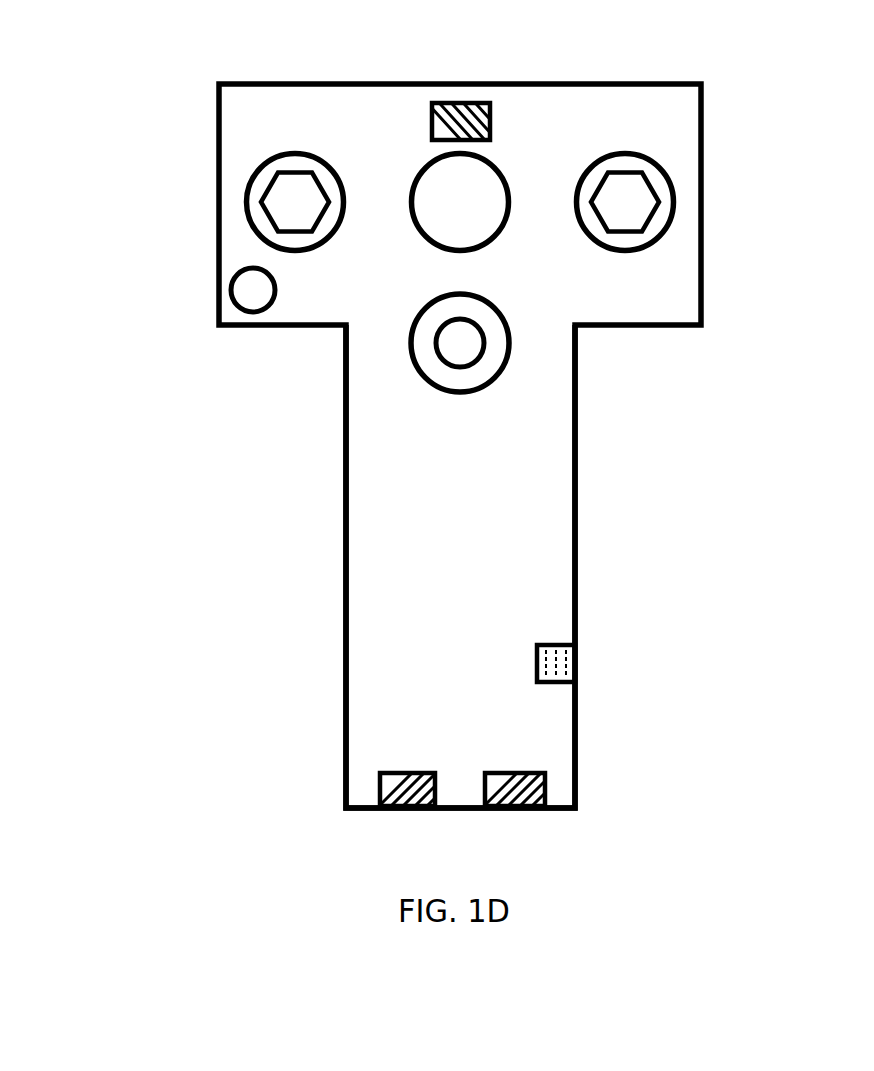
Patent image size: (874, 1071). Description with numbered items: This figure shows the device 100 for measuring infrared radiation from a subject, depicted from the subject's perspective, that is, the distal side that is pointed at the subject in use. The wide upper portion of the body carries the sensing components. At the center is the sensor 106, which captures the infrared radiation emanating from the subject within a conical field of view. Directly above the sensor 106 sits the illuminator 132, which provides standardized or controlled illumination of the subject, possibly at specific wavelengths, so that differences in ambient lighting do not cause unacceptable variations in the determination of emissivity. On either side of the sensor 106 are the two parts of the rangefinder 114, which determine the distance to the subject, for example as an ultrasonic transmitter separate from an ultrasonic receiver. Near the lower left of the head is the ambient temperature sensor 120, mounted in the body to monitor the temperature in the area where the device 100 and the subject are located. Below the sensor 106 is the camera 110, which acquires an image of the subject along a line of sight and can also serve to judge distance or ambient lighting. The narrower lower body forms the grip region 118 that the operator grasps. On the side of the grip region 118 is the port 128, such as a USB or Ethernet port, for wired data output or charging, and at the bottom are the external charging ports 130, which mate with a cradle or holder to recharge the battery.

The device 100 is at (282, 63).
The sensor 106 is at (503, 157).
The camera 110 is at (524, 366).
The rangefinder 114 is at (231, 186).
The grip region 118 is at (321, 559).
The ambient temperature sensor 120 is at (214, 284).
The port 128 is at (589, 655).
The external charging ports 130 is at (545, 765).
The illuminator 132 is at (454, 92).